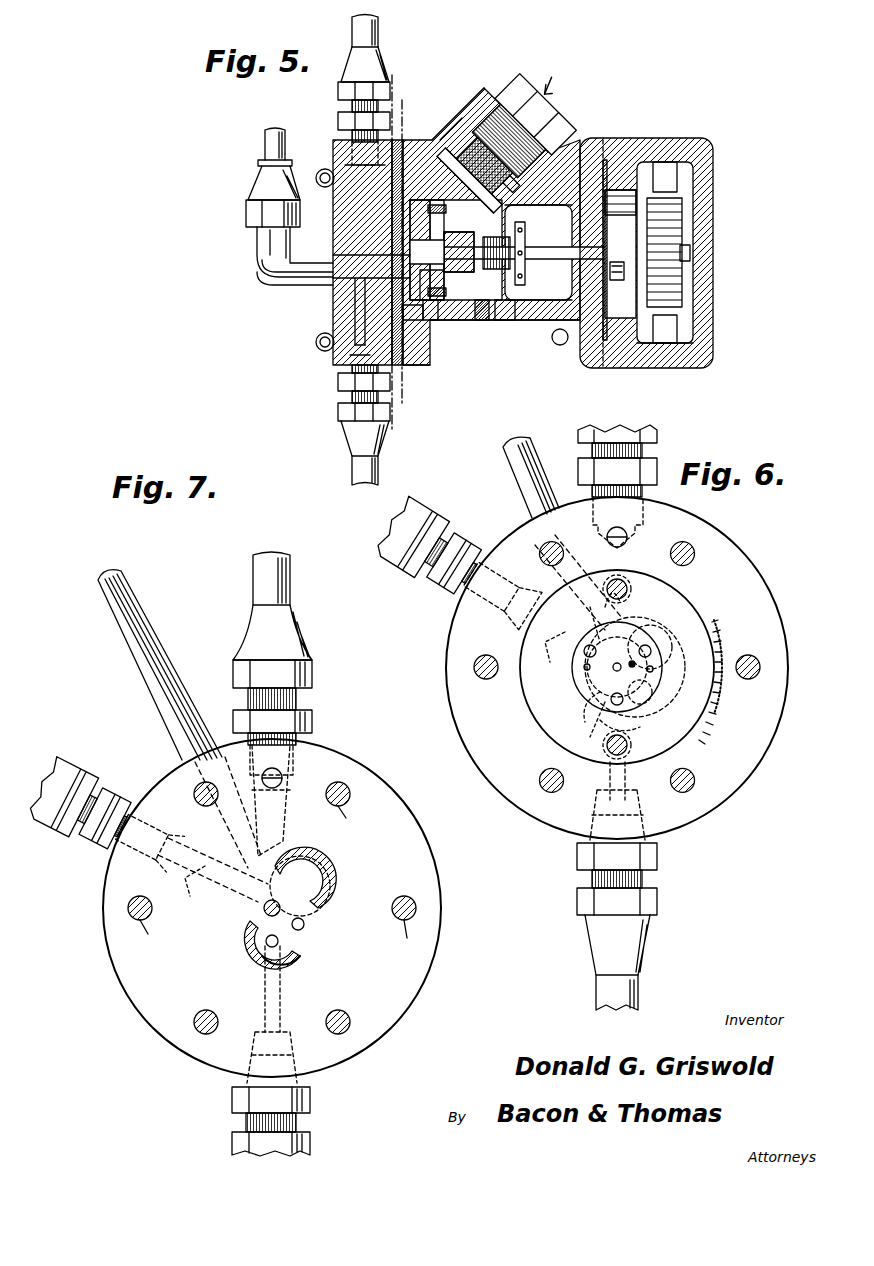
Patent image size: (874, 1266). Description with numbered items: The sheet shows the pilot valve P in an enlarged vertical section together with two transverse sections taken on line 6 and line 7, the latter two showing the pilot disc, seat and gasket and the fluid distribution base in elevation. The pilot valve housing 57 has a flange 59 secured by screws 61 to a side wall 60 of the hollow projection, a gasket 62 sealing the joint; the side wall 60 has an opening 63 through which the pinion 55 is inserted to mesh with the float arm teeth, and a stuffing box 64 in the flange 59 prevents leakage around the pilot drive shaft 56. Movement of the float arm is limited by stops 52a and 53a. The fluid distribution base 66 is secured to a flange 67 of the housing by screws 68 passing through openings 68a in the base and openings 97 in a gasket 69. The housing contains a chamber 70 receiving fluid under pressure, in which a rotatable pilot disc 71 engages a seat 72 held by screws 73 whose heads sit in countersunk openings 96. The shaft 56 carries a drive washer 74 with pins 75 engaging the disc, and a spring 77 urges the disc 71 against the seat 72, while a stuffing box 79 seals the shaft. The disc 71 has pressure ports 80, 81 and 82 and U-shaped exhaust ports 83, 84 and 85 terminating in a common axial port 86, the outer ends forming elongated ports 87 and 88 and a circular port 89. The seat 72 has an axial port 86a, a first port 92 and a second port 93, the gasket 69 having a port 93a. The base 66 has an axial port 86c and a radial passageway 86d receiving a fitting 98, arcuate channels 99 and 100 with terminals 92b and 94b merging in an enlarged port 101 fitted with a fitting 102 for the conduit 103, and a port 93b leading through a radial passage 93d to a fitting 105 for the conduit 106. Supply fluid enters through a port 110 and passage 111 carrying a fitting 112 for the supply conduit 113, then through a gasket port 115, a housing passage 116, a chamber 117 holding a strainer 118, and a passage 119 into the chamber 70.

In FIG. 5, the stop 52a is at (678, 330).
In FIG. 5, the stop 53a is at (678, 178).
In FIG. 5, the pinion 55 is at (682, 230).
In FIG. 5, the pilot drive shaft 56 is at (690, 253).
In FIG. 5, the pilot valve housing 57 is at (538, 322).
In FIG. 5, the flange 59 is at (600, 362).
In FIG. 5, the side wall 60 is at (640, 348).
In FIG. 5, the screws 61 is at (560, 345).
In FIG. 5, the gasket 62 is at (606, 165).
In FIG. 5, the opening 63 is at (625, 188).
In FIG. 5, the stuffing box 64 is at (618, 282).
In FIG. 5, the fluid distribution base 66 is at (333, 360).
In FIG. 7, the fluid distribution base 66 is at (165, 1042).
In FIG. 5, the flange 67 is at (422, 368).
In FIG. 5, the screws 68 is at (318, 342).
In FIG. 6, the screws 68 is at (692, 792).
In FIG. 7, the screws 68 is at (338, 1035).
In FIG. 7, the openings 68a is at (276, 883).
In FIG. 5, the gasket 69 is at (440, 330).
In FIG. 6, the gasket 69 is at (770, 620).
In FIG. 5, the chamber 70 is at (484, 322).
In FIG. 5, the pilot disc 71 is at (440, 320).
In FIG. 6, the pilot disc 71 is at (645, 625).
In FIG. 5, the seat 72 is at (425, 322).
In FIG. 6, the seat 72 is at (688, 592).
In FIG. 5, the screws 73 is at (432, 305).
In FIG. 6, the screws 73 is at (612, 754).
In FIG. 5, the drive washer 74 is at (508, 220).
In FIG. 5, the pins 75 is at (520, 292).
In FIG. 6, the pins 75 is at (653, 670).
In FIG. 5, the spring 77 is at (565, 253).
In FIG. 5, the stuffing box 79 is at (527, 240).
In FIG. 6, the pressure port 80 is at (588, 645).
In FIG. 6, the pressure port 81 is at (652, 651).
In FIG. 5, the pressure port 82 is at (505, 322).
In FIG. 6, the pressure port 82 is at (612, 704).
In FIG. 5, the exhaust port 83 is at (479, 146).
In FIG. 6, the exhaust port 83 is at (592, 623).
In FIG. 6, the exhaust port 84 is at (638, 663).
In FIG. 6, the exhaust port 85 is at (620, 692).
In FIG. 6, the axial port 86 is at (617, 662).
In FIG. 5, the axial port 86a is at (290, 280).
In FIG. 5, the axial port 86c is at (333, 256).
In FIG. 7, the axial port 86c is at (310, 884).
In FIG. 6, the radial passageway 86d is at (547, 651).
In FIG. 7, the radial passageway 86d is at (188, 885).
In FIG. 6, the elongated port 87 is at (612, 607).
In FIG. 6, the elongated port 88 is at (690, 738).
In FIG. 6, the circular port 89 is at (573, 707).
In FIG. 5, the first port 92 is at (444, 232).
In FIG. 7, the terminal 92b is at (285, 841).
In FIG. 5, the second port 93 is at (430, 322).
In FIG. 5, the port 93a is at (355, 310).
In FIG. 5, the port 93b is at (355, 287).
In FIG. 7, the port 93b is at (268, 944).
In FIG. 5, the radial passage 93d is at (360, 350).
In FIG. 6, the radial passage 93d is at (628, 770).
In FIG. 7, the radial passage 93d is at (268, 1005).
In FIG. 7, the terminal 94b is at (245, 928).
In FIG. 6, the countersunk openings 96 is at (445, 612).
In FIG. 6, the openings 97 is at (488, 672).
In FIG. 7, the fitting 98 is at (88, 860).
In FIG. 6, the arcuate channel 99 is at (690, 614).
In FIG. 7, the arcuate channel 99 is at (322, 868).
In FIG. 5, the arcuate channel 100 is at (420, 300).
In FIG. 6, the arcuate channel 100 is at (630, 738).
In FIG. 7, the arcuate channel 100 is at (298, 964).
In FIG. 5, the port 101 is at (410, 245).
In FIG. 6, the port 101 is at (658, 696).
In FIG. 7, the port 101 is at (303, 928).
In FIG. 5, the fitting 102 is at (257, 262).
In FIG. 7, the fitting 102 is at (218, 840).
In FIG. 5, the conduit 103 is at (264, 146).
In FIG. 6, the conduit 103 is at (517, 475).
In FIG. 7, the conduit 103 is at (142, 606).
In FIG. 5, the fitting 105 is at (342, 392).
In FIG. 6, the fitting 105 is at (660, 858).
In FIG. 7, the fitting 105 is at (236, 1108).
In FIG. 5, the conduit 106 is at (352, 470).
In FIG. 6, the conduit 106 is at (638, 985).
In FIG. 5, the port 110 is at (405, 205).
In FIG. 7, the port 110 is at (284, 778).
In FIG. 5, the passage 111 is at (340, 152).
In FIG. 6, the passage 111 is at (643, 518).
In FIG. 7, the passage 111 is at (296, 745).
In FIG. 5, the fitting 112 is at (342, 122).
In FIG. 6, the fitting 112 is at (580, 465).
In FIG. 7, the fitting 112 is at (236, 712).
In FIG. 5, the supply conduit 113 is at (383, 30).
In FIG. 7, the supply conduit 113 is at (290, 582).
In FIG. 5, the port 115 is at (442, 135).
In FIG. 6, the port 115 is at (608, 541).
In FIG. 5, the passage 116 is at (462, 116).
In FIG. 5, the chamber 117 is at (493, 135).
In FIG. 5, the strainer 118 is at (539, 111).
In FIG. 5, the passage 119 is at (491, 183).
In FIG. 5, the pilot valve P is at (533, 69).
In FIG. 5, the line 6- 6 is at (409, 397).
In FIG. 5, the line 7- 7 is at (400, 432).